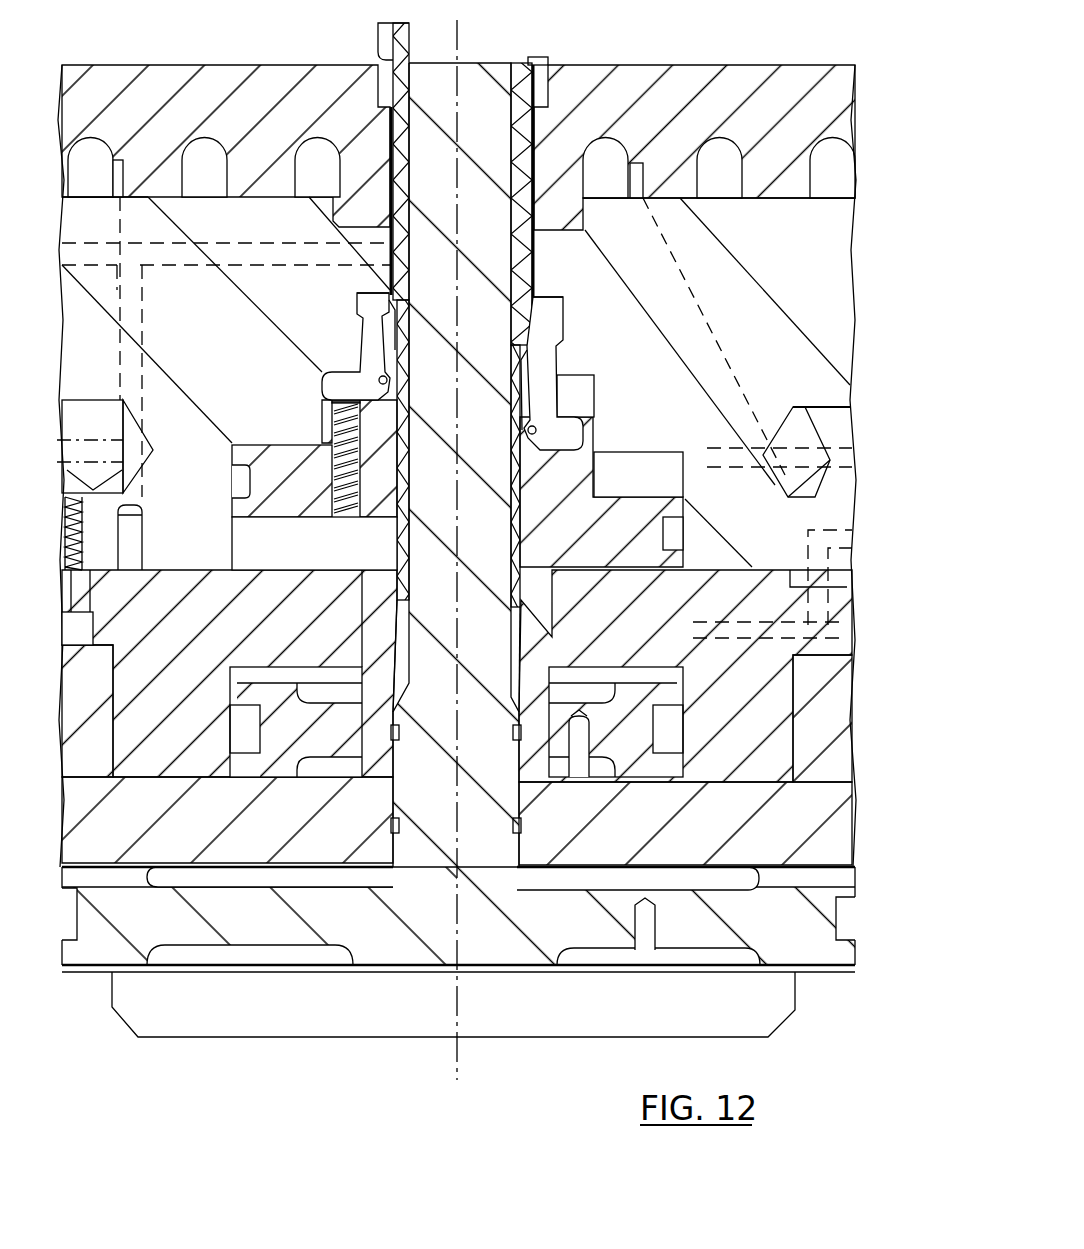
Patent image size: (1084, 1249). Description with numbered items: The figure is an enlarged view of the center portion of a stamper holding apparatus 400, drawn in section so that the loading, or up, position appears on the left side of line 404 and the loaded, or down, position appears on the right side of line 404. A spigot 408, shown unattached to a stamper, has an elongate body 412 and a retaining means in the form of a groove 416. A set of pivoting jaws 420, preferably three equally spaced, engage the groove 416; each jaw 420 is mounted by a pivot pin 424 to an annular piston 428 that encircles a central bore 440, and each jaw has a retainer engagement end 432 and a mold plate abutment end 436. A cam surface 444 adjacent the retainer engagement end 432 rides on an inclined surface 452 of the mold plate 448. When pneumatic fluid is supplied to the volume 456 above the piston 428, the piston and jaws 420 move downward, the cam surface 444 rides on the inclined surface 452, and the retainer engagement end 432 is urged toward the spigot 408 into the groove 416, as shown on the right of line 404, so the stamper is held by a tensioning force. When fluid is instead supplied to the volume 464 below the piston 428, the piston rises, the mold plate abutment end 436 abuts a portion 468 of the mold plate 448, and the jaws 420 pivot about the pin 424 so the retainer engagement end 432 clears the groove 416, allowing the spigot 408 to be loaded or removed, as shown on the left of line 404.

The apparatus 400 is at (753, 46).
The line 404 is at (459, 1067).
The spigot 408 is at (385, 45).
The elongate body 412 is at (396, 118).
The groove 416 is at (409, 300).
The pivoting jaws 420 is at (366, 312).
The pivot pin 424 is at (388, 378).
The piston 428 is at (284, 470).
The retainer engagement end 432 is at (390, 288).
The mold plate abutment end 436 is at (328, 397).
The central bore 440 is at (521, 75).
The cam surface 444 is at (358, 296).
The mold plate 448 is at (202, 321).
The inclined surface 452 is at (362, 490).
The volume above piston 456 is at (660, 492).
The volume below piston 464 is at (337, 559).
The portion of mold plate 468 is at (330, 368).